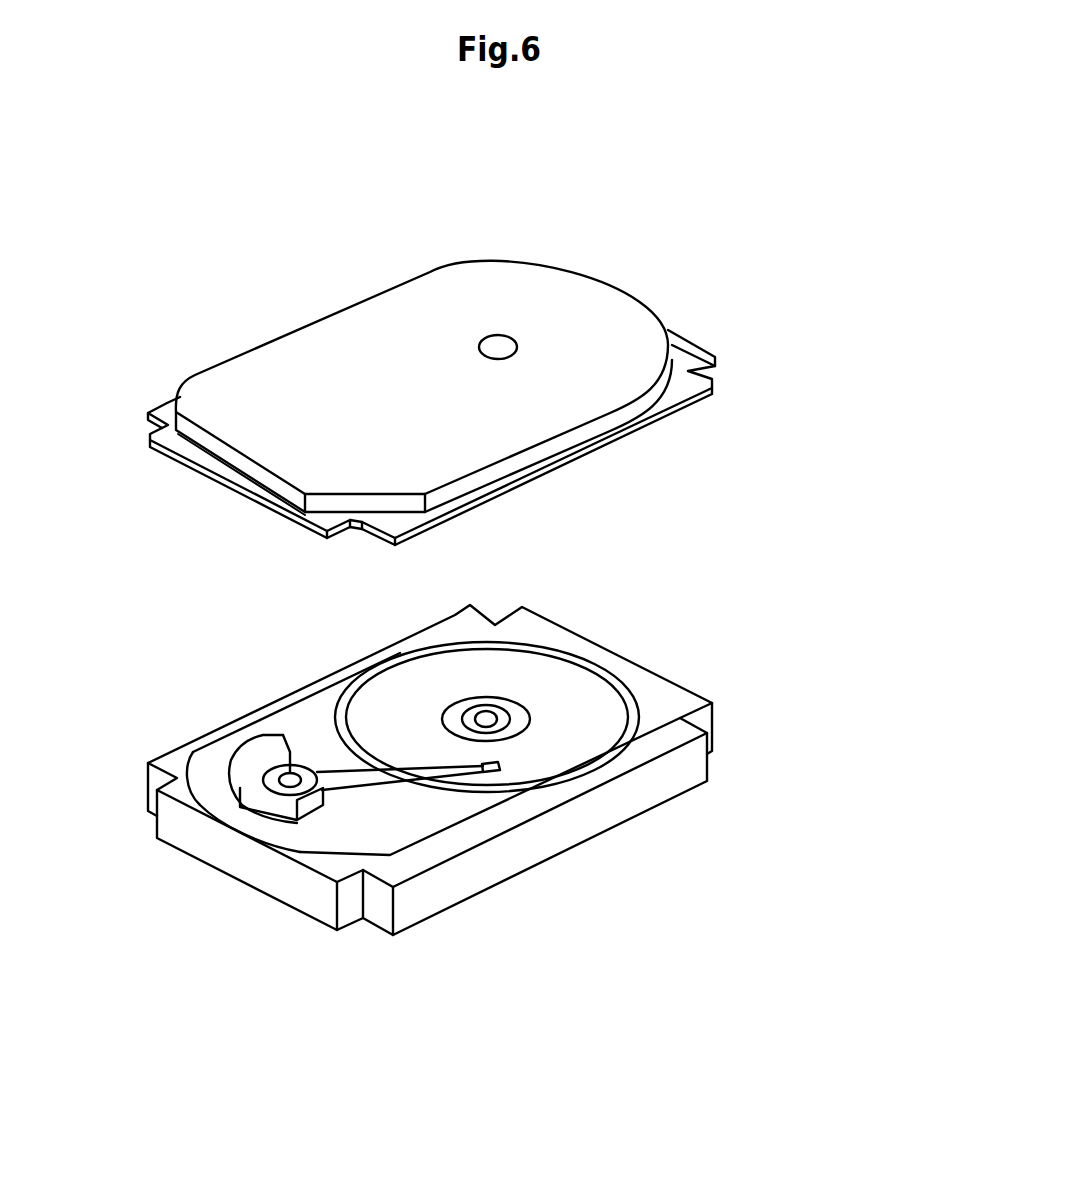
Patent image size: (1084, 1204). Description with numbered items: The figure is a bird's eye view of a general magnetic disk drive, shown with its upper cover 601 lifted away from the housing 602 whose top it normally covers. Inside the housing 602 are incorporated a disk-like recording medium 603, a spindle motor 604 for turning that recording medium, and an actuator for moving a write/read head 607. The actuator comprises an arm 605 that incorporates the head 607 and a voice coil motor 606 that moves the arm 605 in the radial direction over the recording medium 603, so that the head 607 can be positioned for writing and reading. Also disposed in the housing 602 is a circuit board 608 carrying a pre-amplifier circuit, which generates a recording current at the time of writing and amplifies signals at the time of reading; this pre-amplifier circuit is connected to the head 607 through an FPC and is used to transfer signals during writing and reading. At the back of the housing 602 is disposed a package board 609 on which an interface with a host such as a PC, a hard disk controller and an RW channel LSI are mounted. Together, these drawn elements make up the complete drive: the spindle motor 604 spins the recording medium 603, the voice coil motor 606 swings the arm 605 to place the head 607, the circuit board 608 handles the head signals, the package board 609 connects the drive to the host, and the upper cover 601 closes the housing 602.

The upper cover 601 is at (673, 336).
The housing 602 is at (673, 700).
The disk-like recording medium 603 is at (383, 683).
The spindle motor 604 is at (482, 716).
The arm 605 is at (403, 771).
The voice coil motor 606 is at (200, 752).
The write/read head 607 is at (500, 770).
The circuit board 608 is at (288, 830).
The package board 609 is at (362, 922).